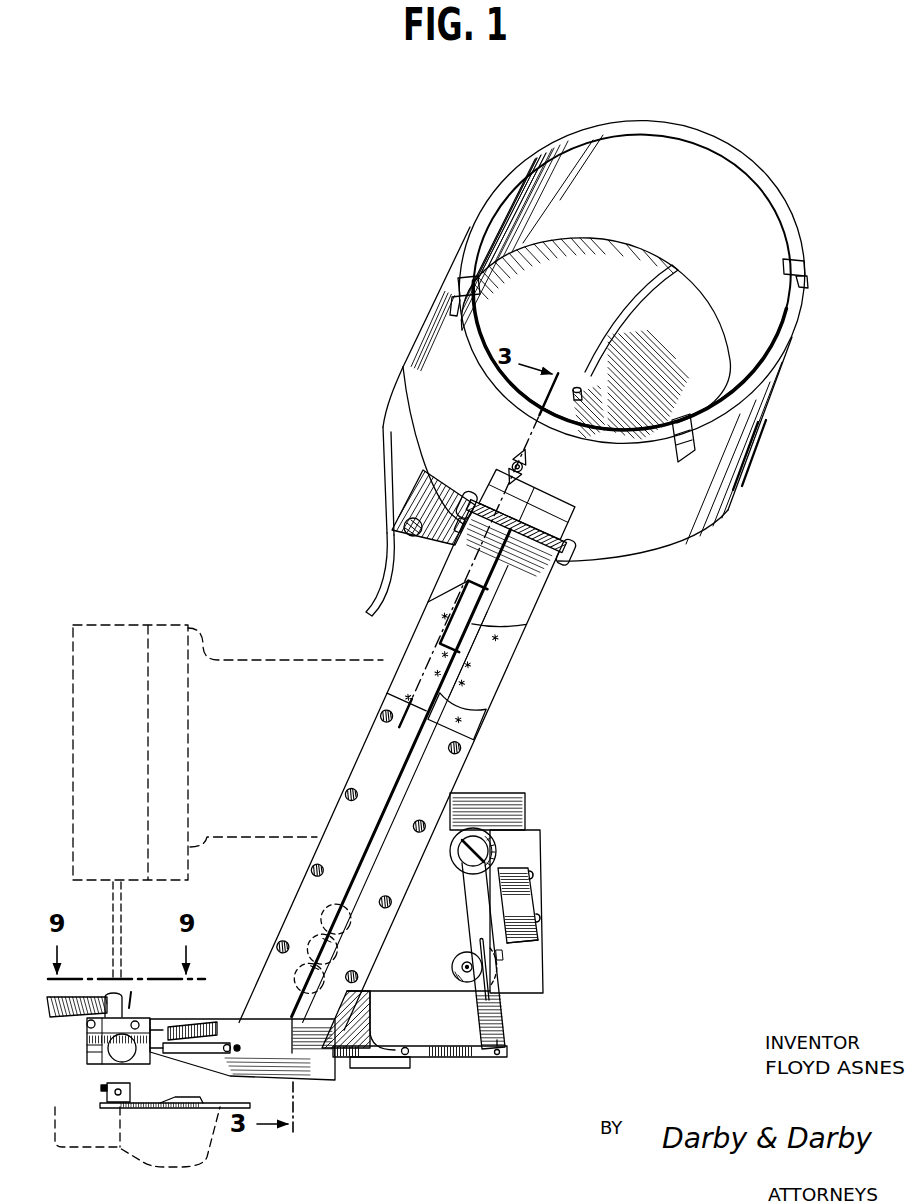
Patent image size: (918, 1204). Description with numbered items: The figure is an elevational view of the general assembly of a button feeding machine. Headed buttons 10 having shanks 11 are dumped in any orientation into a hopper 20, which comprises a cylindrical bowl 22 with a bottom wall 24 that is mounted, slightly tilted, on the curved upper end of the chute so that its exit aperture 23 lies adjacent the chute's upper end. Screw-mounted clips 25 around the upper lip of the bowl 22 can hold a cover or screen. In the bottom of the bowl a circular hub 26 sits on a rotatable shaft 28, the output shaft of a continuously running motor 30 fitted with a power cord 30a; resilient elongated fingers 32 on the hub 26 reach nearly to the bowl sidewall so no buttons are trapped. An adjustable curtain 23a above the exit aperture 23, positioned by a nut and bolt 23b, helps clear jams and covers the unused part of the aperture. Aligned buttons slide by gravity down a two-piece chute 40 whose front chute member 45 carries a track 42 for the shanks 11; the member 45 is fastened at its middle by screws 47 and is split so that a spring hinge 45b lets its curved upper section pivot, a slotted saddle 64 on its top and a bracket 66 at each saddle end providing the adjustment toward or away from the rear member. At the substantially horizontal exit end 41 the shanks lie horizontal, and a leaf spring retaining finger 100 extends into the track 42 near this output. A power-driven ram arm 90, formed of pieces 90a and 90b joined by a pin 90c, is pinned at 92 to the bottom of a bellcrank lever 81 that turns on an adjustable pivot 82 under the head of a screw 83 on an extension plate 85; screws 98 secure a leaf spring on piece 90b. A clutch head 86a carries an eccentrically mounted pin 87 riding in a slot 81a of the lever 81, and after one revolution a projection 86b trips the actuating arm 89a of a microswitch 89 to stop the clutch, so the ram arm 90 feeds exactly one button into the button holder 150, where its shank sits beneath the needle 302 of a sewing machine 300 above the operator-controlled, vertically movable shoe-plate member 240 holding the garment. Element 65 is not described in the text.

The hopper 20 is at (718, 139).
The cylindrical bowl 22 is at (448, 279).
The bottom wall 24 is at (592, 308).
The screw-mounted clips 25 is at (838, 243).
The circular hub 26 is at (600, 388).
The rotatable shaft 28 is at (575, 388).
The motor 30 is at (382, 432).
The power cord 30a is at (388, 561).
The elongated fingers 32 is at (636, 302).
The exit aperture 23 is at (549, 524).
The adjustable curtain 23a is at (553, 503).
The nut and bolt 23b is at (532, 469).
The two-piece chute 40 is at (517, 660).
The track 42 is at (486, 721).
The front chute member 45 is at (447, 594).
The hinge 45b is at (504, 660).
The screws 47 is at (350, 788).
The saddle 64 is at (569, 556).
The clamp flange 65 is at (474, 492).
The bracket 66 is at (462, 540).
The headed buttons 10 is at (324, 914).
The shanks 11 is at (320, 950).
The bellcrank lever 81 is at (509, 1026).
The slot 81a is at (478, 1001).
The adjustable pivot 82 is at (492, 849).
The screw 83 is at (512, 826).
The extension plate 85 is at (531, 981).
The clutch head 86a is at (455, 975).
The projection 86b is at (502, 956).
The eccentrically mounted pin 87 is at (480, 962).
The microswitch 89 is at (521, 898).
The actuating arm 89a is at (502, 943).
The ram arm 90 is at (451, 1062).
The ram arm piece 90a is at (420, 1052).
The ram arm piece 90b is at (363, 1050).
The pin 90c is at (405, 1047).
The pin 92 is at (498, 1056).
The screws 98 is at (254, 1061).
The leaf spring retaining finger 100 is at (188, 1027).
The exit end 41 is at (132, 992).
The button holder 150 is at (97, 1061).
The shoe-plate member 240 is at (190, 1110).
The sewing machine 300 is at (163, 623).
The needle 302 is at (127, 906).